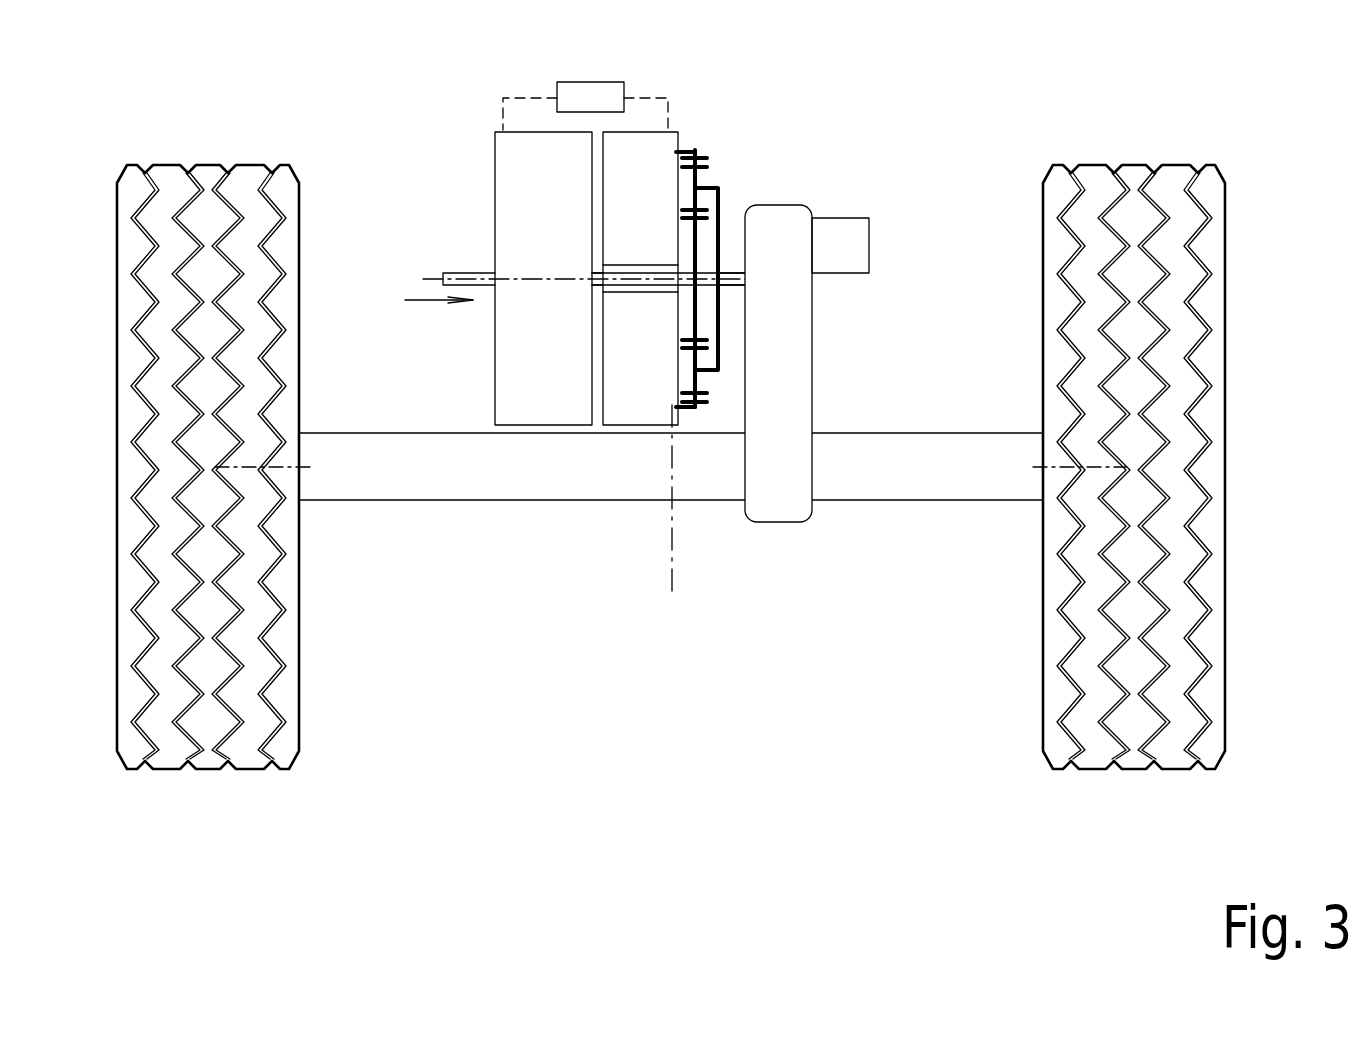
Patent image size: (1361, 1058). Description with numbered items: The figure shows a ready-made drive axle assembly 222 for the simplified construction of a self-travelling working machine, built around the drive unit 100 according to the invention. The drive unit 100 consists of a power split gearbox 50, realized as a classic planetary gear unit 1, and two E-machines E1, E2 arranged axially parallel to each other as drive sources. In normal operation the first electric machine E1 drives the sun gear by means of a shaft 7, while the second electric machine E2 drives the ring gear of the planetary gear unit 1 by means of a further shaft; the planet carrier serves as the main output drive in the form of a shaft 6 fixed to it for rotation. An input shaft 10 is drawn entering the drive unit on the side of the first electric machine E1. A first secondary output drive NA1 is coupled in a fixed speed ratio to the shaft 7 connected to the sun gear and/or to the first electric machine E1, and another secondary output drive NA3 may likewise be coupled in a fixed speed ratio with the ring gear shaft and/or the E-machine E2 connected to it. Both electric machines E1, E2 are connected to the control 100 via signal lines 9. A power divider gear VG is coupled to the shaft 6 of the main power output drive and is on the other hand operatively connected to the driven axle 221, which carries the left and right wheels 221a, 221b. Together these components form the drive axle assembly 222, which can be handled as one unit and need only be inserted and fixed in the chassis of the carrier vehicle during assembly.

The planetary gear unit 1 is at (745, 245).
The power split gearbox 50 is at (733, 158).
The shaft 6 is at (738, 286).
The shaft 7 is at (595, 283).
The signal lines 9 is at (502, 108).
The input shaft 10 is at (430, 278).
The drive unit 100 is at (595, 95).
The driven axle 221 is at (671, 466).
The left wheel 221a is at (312, 588).
The right wheel 221b is at (1030, 587).
The drive axle assembly 222 is at (583, 662).
The first electric machine E1 is at (543, 278).
The second electric machine E2 is at (640, 278).
The power divider gear VG is at (778, 363).
The first secondary output drive NA1 is at (411, 298).
The secondary output drive NA3 is at (840, 245).